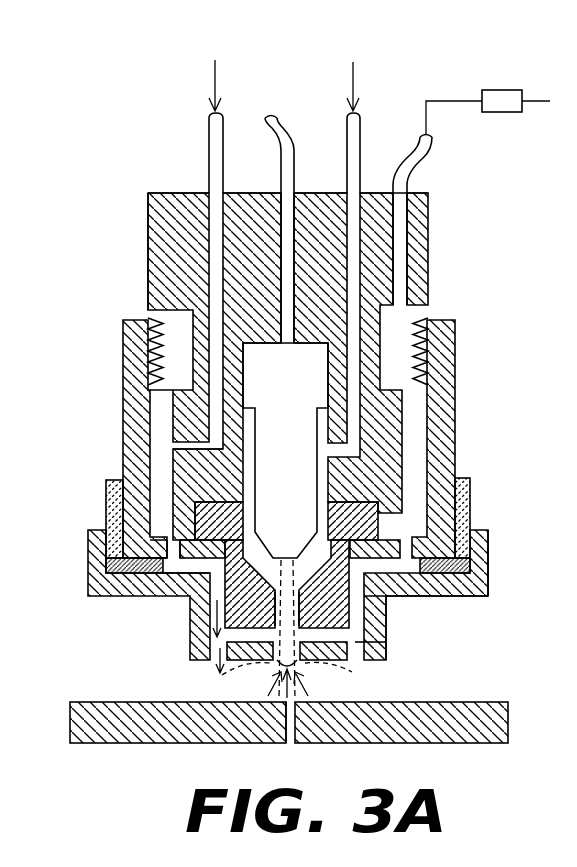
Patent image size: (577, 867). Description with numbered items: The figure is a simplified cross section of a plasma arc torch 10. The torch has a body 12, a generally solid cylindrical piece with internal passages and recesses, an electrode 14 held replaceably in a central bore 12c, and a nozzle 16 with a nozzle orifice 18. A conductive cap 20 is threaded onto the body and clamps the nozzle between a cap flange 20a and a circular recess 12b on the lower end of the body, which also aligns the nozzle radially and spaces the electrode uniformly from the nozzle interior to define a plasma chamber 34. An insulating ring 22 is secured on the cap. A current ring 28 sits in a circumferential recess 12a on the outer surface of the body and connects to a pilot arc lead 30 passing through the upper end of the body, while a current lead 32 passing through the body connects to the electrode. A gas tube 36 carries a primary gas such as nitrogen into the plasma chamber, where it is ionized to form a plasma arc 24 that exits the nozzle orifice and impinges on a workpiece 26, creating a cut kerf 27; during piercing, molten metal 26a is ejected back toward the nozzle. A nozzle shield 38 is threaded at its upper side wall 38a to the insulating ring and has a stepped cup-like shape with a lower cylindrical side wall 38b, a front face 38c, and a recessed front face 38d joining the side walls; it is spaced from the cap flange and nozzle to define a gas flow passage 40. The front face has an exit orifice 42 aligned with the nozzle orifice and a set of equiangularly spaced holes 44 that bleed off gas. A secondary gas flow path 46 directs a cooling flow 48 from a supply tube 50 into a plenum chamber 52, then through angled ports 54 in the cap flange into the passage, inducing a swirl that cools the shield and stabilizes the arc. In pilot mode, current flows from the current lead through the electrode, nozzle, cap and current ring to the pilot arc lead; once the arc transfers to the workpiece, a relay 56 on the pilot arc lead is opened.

The plasma arc torch 10 is at (478, 251).
The body 12 is at (428, 230).
The circumferential recess 12a is at (148, 262).
The circular recess 12b is at (213, 488).
The central bore 12c is at (162, 366).
The electrode 14 is at (294, 458).
The nozzle 16 is at (225, 625).
The nozzle orifice 18 is at (296, 578).
The cap 20 is at (455, 411).
The cap flange 20a is at (186, 598).
The insulating ring 22 is at (470, 504).
The plasma arc 24 is at (258, 630).
The workpiece 26 is at (393, 702).
The molten metal 26a is at (320, 685).
The cut kerf 27 is at (285, 722).
The current ring 28 is at (148, 318).
The pilot arc lead 30 is at (432, 153).
The current lead 32 is at (267, 118).
The plasma chamber 34 is at (207, 472).
The gas tube 36 is at (347, 137).
The nozzle shield 38 is at (388, 638).
The upper side wall 38a is at (488, 561).
The lower side wall 38b is at (388, 612).
The front face 38c is at (229, 670).
The recessed front face 38d is at (458, 596).
The gas flow passage 40 is at (190, 601).
The exit orifice 42 is at (308, 666).
The holes 44 is at (353, 659).
The secondary gas flow path 46 is at (228, 191).
The flow of cooling gas 48 is at (213, 79).
The supply tube 50 is at (209, 156).
The plenum chamber 52 is at (160, 418).
The ports 54 is at (172, 556).
The relay 56 is at (500, 100).